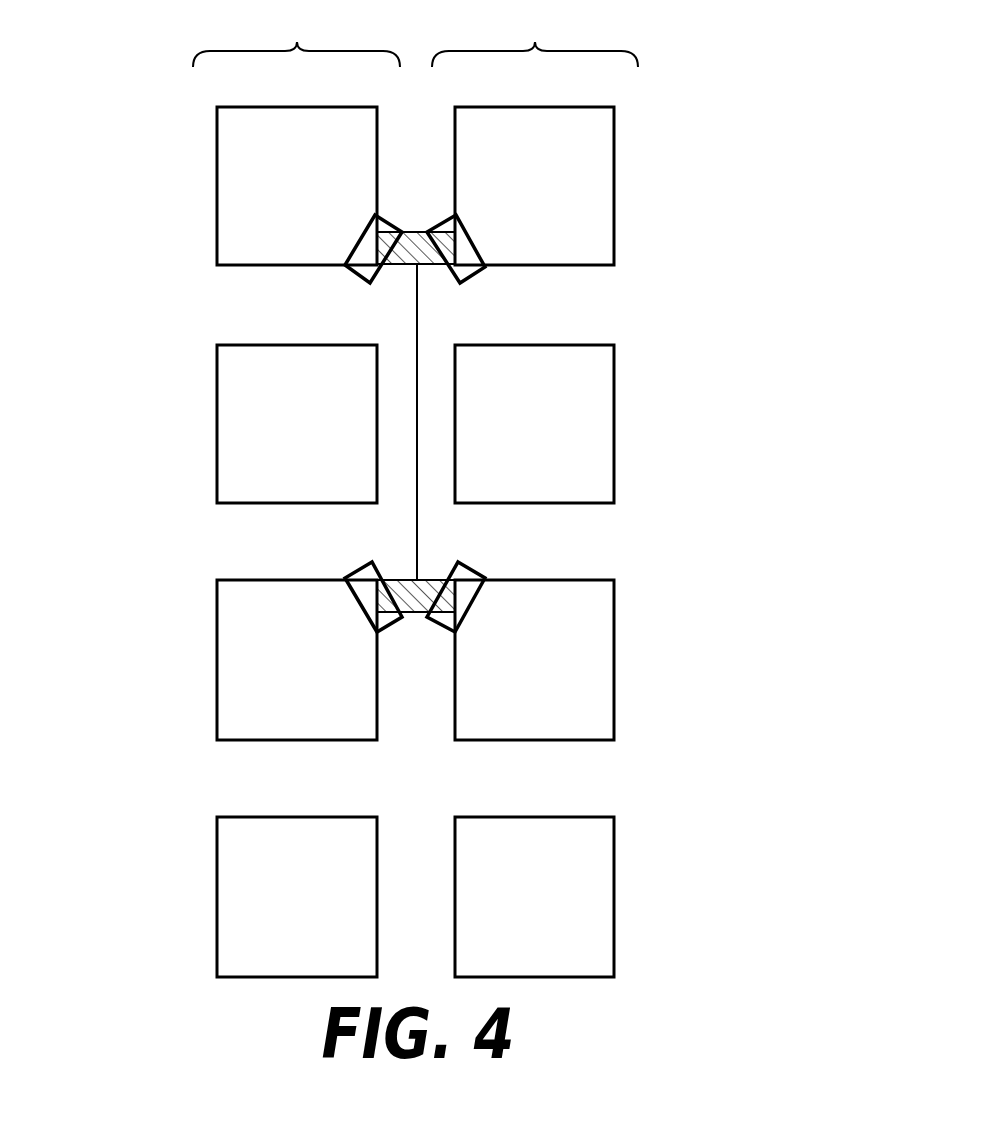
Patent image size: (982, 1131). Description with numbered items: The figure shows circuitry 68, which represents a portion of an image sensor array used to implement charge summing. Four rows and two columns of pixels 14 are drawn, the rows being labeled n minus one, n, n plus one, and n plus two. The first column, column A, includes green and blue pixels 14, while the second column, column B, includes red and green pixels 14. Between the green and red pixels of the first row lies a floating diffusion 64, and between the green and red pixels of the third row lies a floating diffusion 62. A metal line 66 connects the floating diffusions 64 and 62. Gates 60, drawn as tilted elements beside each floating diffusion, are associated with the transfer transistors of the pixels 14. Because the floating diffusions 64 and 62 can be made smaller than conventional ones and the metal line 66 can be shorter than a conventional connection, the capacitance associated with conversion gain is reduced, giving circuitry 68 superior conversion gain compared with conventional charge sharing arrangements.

The pixels 14 is at (225, 162).
The gates 60 is at (387, 228).
The floating diffusion 62 is at (430, 581).
The floating diffusion 64 is at (430, 267).
The metal line 66 is at (417, 323).
The circuitry 68 is at (748, 86).